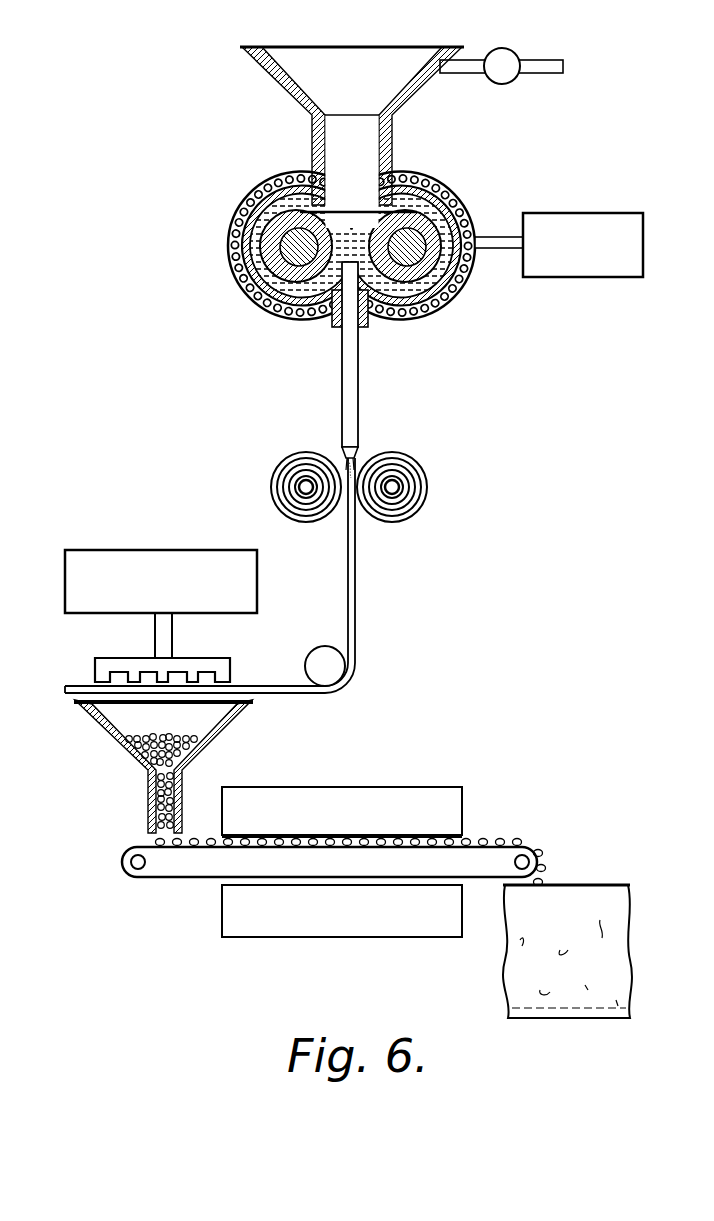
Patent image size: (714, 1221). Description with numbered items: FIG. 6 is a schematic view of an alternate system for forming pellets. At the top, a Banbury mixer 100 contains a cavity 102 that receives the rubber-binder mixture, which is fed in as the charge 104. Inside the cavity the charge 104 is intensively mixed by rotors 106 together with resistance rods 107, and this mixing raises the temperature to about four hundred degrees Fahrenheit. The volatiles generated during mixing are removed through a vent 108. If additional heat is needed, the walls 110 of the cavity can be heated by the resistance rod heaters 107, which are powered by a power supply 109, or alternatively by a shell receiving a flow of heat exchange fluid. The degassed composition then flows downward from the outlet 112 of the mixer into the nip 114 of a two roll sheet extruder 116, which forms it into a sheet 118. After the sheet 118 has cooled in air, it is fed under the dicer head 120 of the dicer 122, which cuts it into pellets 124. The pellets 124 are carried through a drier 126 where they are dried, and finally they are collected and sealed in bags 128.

The Banbury mixer 100 is at (388, 235).
The cavity 102 is at (391, 152).
The charge 104 is at (313, 153).
The rotors 106 is at (232, 226).
The resistance rods 107 is at (442, 180).
The vent 108 is at (540, 60).
The power supply 109 is at (558, 213).
The walls 110 is at (242, 195).
The outlet 112 is at (350, 327).
The nip 114 is at (356, 458).
The two roll sheet extruder 116 is at (291, 462).
The sheet 118 is at (358, 573).
The dicer head 120 is at (95, 658).
The dicer 122 is at (178, 550).
The pellets 124 is at (207, 727).
The drier 126 is at (411, 787).
The bags 128 is at (600, 885).